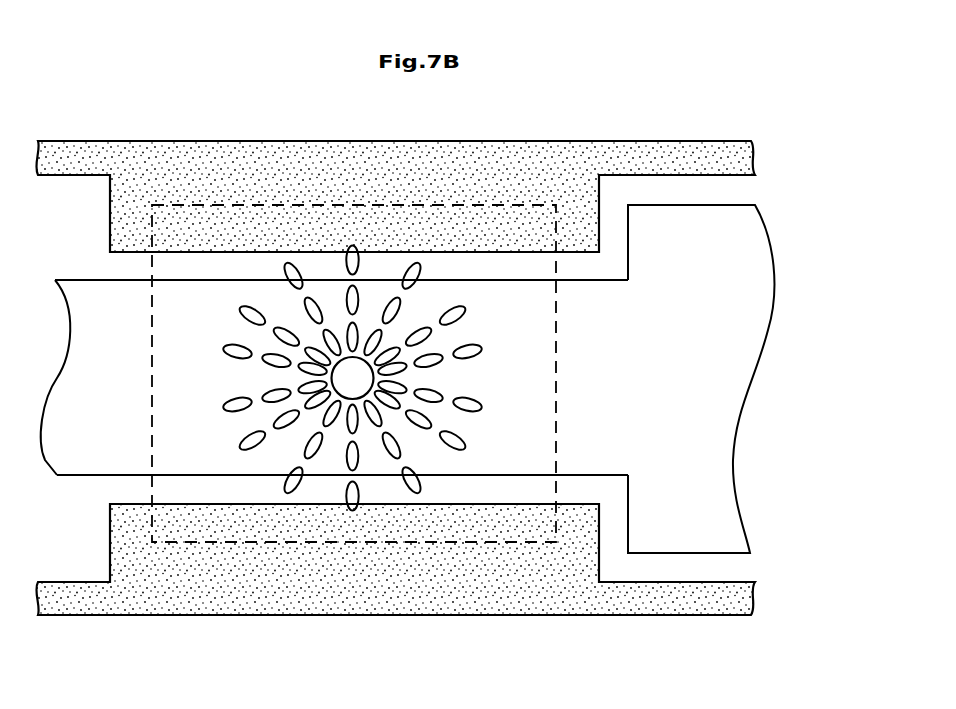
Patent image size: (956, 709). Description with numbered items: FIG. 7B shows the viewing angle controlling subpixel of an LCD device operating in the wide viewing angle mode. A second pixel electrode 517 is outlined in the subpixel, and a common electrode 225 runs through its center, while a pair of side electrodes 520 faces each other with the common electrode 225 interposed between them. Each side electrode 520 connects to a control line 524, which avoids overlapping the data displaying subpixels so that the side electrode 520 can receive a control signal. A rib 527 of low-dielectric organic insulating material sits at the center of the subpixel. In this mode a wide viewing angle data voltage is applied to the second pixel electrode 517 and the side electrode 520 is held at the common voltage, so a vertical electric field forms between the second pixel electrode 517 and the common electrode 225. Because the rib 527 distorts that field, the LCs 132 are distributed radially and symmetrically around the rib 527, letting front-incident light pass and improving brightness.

The control line 524 is at (668, 148).
The side electrode 520 is at (590, 228).
The second pixel electrode 517 is at (556, 374).
The LCs 132 is at (243, 310).
The rib 527 is at (331, 383).
The common electrode 225 is at (75, 475).